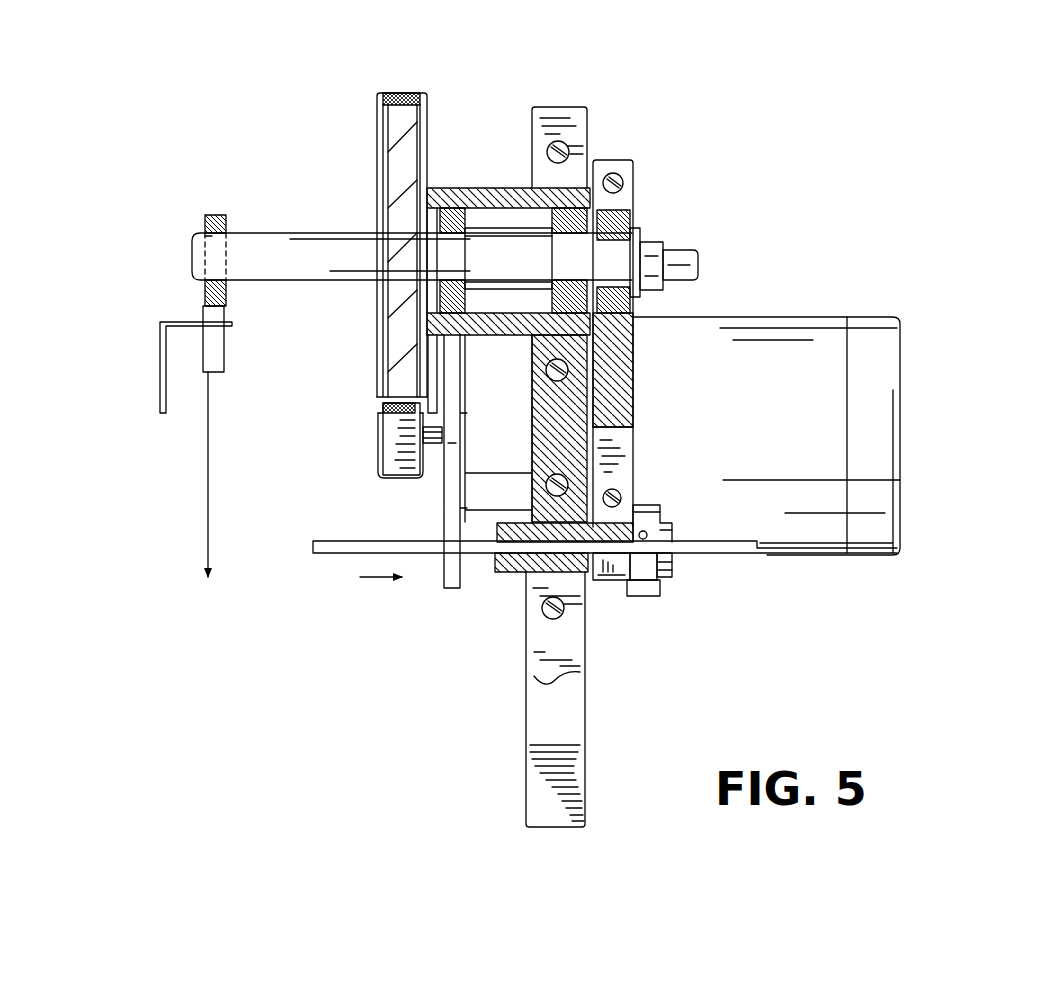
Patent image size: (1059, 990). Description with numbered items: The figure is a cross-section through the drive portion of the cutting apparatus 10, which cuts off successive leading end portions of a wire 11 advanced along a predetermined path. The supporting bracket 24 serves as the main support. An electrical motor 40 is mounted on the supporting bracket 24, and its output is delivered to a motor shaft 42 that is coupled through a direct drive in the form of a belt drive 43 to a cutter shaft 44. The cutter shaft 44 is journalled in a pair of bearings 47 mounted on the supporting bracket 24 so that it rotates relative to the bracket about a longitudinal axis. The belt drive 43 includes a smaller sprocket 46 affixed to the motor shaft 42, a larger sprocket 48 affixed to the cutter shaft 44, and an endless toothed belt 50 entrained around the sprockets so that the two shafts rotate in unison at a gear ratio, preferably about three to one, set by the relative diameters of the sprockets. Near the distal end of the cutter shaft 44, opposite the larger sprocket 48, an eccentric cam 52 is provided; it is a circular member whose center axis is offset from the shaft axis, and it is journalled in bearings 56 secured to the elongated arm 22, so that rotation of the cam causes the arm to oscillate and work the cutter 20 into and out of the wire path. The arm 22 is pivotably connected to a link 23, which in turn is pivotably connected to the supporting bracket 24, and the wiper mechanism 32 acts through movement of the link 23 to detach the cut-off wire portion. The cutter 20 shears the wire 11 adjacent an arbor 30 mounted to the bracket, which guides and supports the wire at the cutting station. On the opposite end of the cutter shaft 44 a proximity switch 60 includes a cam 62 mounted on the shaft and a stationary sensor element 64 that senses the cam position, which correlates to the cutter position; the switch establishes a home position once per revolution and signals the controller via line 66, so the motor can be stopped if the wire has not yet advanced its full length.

The cutting apparatus 10 is at (630, 115).
The wire 11 is at (700, 553).
The cutter 20 is at (612, 522).
The elongated arm 22 is at (617, 380).
The link 23 is at (645, 597).
The supporting bracket 24 is at (508, 192).
The arbor 30 is at (560, 575).
The wiper mechanism 32 is at (662, 521).
The electrical motor 40 is at (768, 330).
The motor shaft 42 is at (363, 459).
The belt drive 43 is at (379, 202).
The cutter shaft 44 is at (200, 256).
The smaller sprocket 46 is at (393, 462).
The bearings 47 is at (553, 213).
The larger sprocket 48 is at (397, 165).
The endless toothed belt 50 is at (400, 96).
The eccentric cam 52 is at (610, 262).
The bearings 56 is at (612, 222).
The proximity switch 60 is at (177, 355).
The cam 62 is at (217, 214).
The stationary sensor element 64 is at (218, 325).
The line 66 is at (208, 492).